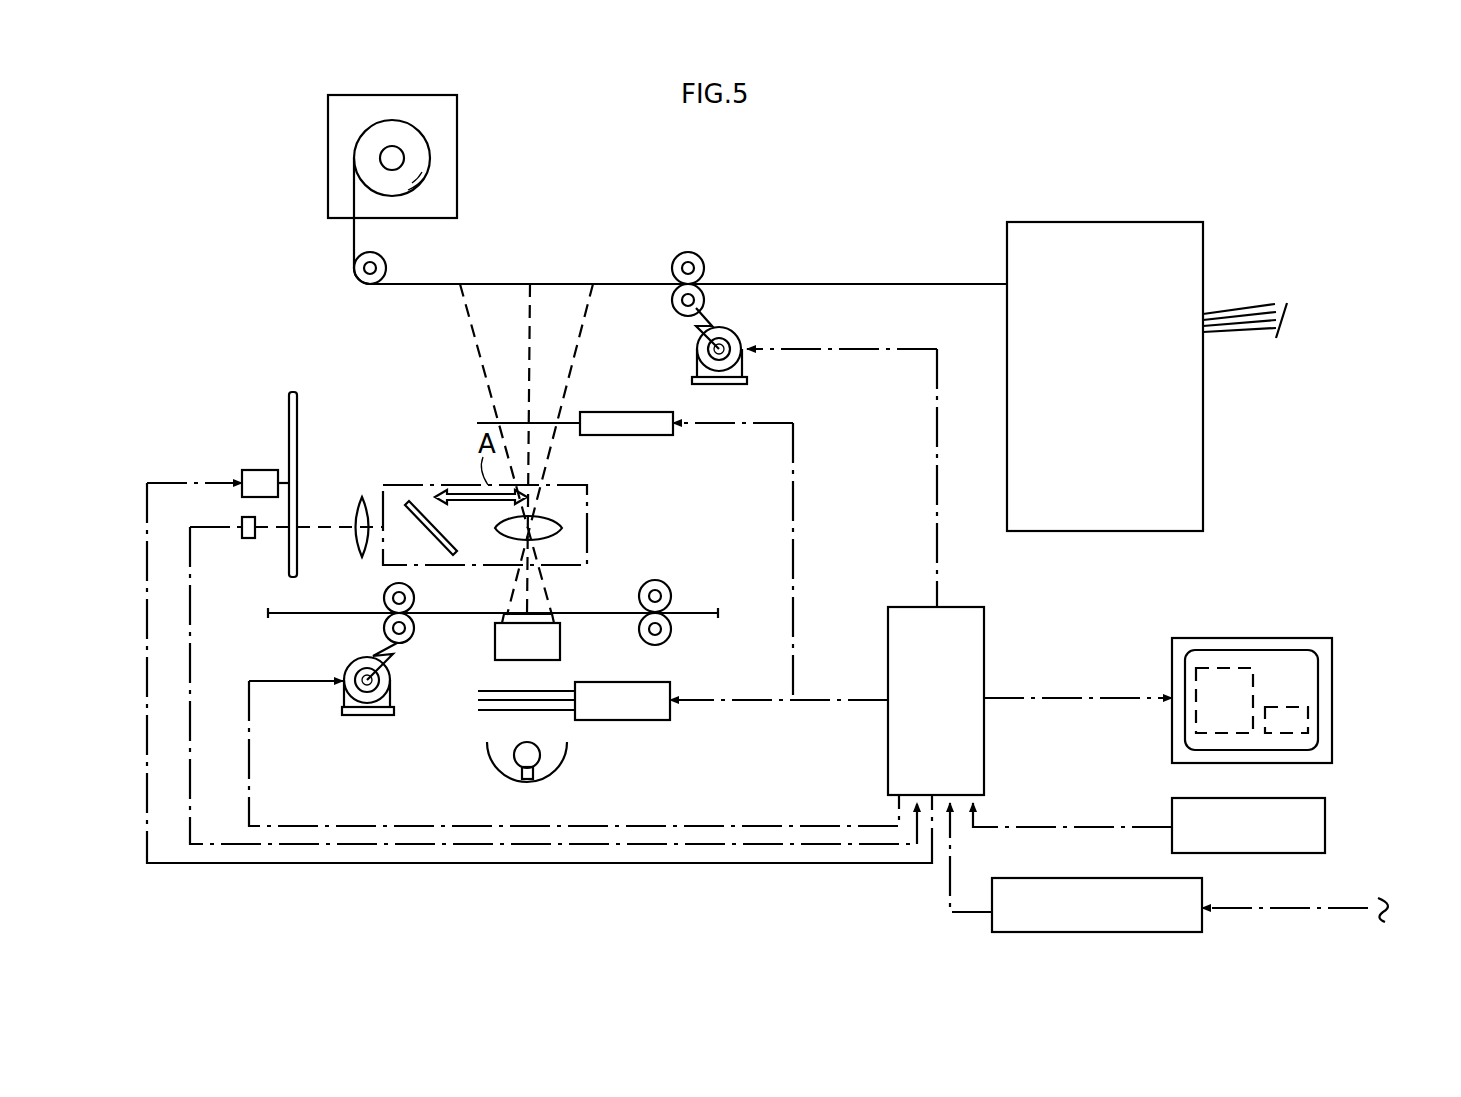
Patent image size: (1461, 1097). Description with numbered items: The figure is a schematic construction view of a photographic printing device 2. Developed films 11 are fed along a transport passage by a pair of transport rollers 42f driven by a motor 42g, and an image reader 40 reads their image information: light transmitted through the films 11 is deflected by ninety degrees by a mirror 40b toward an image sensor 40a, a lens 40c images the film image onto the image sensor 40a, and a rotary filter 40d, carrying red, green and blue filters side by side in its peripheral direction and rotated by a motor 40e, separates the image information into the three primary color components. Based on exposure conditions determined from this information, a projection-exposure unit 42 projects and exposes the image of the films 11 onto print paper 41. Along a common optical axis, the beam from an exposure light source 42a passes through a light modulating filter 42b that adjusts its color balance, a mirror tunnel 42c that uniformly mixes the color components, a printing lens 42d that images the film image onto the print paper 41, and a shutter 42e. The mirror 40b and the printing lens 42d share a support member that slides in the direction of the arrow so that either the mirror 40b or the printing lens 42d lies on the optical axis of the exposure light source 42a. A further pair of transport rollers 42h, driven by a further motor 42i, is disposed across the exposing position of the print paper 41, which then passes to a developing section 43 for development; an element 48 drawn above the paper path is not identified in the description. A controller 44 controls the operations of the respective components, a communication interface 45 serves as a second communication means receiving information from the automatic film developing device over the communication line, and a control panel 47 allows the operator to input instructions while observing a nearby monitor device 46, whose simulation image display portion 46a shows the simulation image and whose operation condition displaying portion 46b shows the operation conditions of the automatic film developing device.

The photographic printing device 2 is at (641, 878).
The developed films 11 is at (330, 612).
The image reader 40 is at (266, 381).
The image sensor 40a is at (247, 538).
The mirror 40b is at (413, 503).
The lens 40c is at (360, 498).
The rotary filter 40d is at (297, 403).
The motor 40e is at (242, 470).
The print paper 41 is at (353, 244).
The projection-exposure unit 42 is at (446, 740).
The exposure light source 42a is at (563, 760).
The light modulating filter 42b is at (493, 690).
The mirror tunnel 42c is at (560, 645).
The printing lens 42d is at (562, 525).
The shutter 42e is at (620, 412).
The transport rollers 42f is at (665, 580).
The motor 42g is at (353, 715).
The transport rollers 42h is at (386, 263).
The motor 42i is at (738, 332).
The developing section 43 is at (1107, 222).
The controller 44 is at (983, 622).
The communication interface 45 is at (1065, 873).
The monitor device 46 is at (1204, 668).
The simulation image display portion 46a is at (1222, 670).
The operation condition displaying portion 46b is at (1317, 705).
The control panel 47 is at (1320, 810).
The film magazine 48 is at (457, 123).